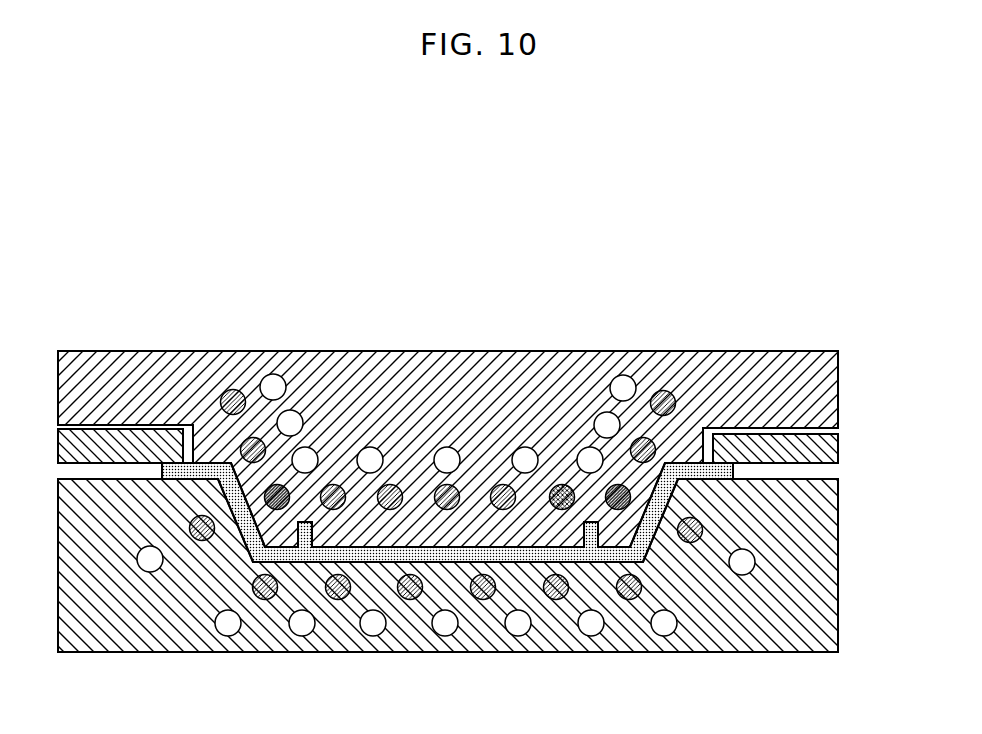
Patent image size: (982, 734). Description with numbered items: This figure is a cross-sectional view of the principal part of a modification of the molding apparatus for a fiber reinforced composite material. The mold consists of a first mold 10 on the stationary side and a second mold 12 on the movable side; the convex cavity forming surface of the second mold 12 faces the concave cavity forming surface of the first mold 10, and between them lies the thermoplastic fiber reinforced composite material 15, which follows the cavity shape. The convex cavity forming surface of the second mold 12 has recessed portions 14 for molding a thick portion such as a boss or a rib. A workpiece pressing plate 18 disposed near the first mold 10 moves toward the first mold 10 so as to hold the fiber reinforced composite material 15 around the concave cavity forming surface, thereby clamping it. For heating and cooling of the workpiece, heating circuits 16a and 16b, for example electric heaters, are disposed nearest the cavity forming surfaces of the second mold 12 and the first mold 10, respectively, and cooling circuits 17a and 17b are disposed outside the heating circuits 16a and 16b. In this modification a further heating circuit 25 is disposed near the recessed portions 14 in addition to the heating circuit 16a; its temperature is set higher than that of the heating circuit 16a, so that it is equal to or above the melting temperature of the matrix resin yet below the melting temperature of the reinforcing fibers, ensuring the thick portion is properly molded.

The first mold 10 is at (794, 654).
The second mold 12 is at (802, 352).
The recessed portions 14 is at (297, 531).
The fiber reinforced composite material 15 is at (733, 477).
The heating circuit 16a is at (447, 488).
The heating circuit 16b is at (408, 594).
The cooling circuit 17a is at (525, 462).
The cooling circuit 17b is at (520, 626).
The workpiece pressing plate 18 is at (830, 450).
The heating circuit 25 is at (390, 490).